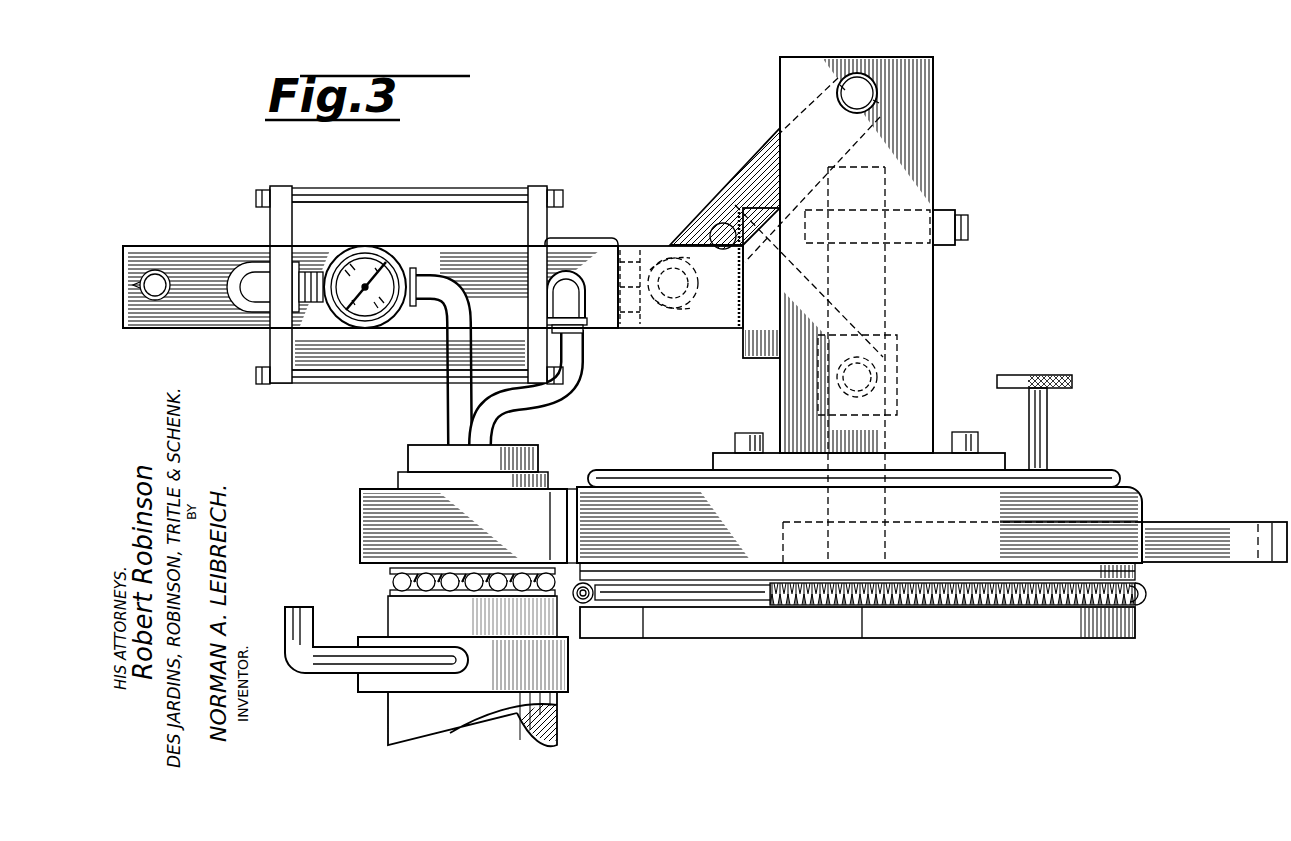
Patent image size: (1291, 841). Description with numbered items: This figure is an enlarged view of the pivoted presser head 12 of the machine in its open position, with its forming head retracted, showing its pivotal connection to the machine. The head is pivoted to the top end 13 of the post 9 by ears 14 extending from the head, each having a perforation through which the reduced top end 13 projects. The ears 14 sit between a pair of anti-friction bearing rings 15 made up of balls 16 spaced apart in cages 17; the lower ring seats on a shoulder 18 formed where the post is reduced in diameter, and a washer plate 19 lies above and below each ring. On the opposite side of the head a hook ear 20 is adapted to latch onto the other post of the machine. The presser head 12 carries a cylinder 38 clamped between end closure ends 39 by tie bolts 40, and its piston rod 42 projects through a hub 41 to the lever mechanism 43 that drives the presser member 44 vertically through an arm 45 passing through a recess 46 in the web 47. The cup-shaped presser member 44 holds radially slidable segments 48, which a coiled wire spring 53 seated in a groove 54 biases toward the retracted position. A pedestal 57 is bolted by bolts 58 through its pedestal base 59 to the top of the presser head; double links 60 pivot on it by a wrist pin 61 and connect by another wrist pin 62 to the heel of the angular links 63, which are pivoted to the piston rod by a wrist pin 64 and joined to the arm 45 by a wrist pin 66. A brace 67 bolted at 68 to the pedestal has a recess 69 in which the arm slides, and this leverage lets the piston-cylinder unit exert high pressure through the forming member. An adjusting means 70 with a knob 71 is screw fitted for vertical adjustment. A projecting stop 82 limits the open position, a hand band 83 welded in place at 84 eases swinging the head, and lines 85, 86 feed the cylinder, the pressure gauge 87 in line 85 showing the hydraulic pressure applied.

The post 9 is at (553, 708).
The presser head 12 is at (980, 275).
The top end of post 13 is at (415, 445).
The ears 14 is at (380, 518).
The anti-friction bearing rings 15 is at (392, 580).
The balls 16 is at (500, 592).
The cages 17 is at (452, 592).
The shoulder 18 is at (395, 605).
The washer plate 19 is at (398, 481).
The hook ear 20 is at (1185, 522).
The cylinder 38 is at (457, 203).
The end closure ends 39 is at (275, 218).
The tie bolts 40 is at (385, 190).
The hub 41 is at (565, 240).
The piston rod 42 is at (620, 250).
The lever mechanism 43 is at (758, 156).
The presser member 44 is at (740, 560).
The arm 45 is at (828, 492).
The recess 46 is at (935, 540).
The web 47 is at (905, 522).
The segments 48 is at (619, 624).
The coiled wire spring 53 is at (1146, 594).
The groove 54 is at (672, 600).
The post or pedestal 57 is at (930, 142).
The bolts 58 is at (962, 438).
The pedestal base 59 is at (720, 462).
The double links 60 is at (752, 180).
The wrist pin 61 is at (858, 92).
The wrist pin 62 is at (720, 230).
The angular links 63 is at (740, 342).
The wrist pin 64 is at (663, 306).
The wrist pin 66 is at (884, 360).
The brace 67 is at (946, 212).
The bolt 68 is at (970, 228).
The recess 69 is at (915, 245).
The adjusting means 70 is at (1048, 425).
The knob 71 is at (1048, 375).
The stop 82 is at (345, 655).
The hand band 83 is at (612, 475).
The weld location 84 is at (588, 478).
The line 85 is at (452, 395).
The line 86 is at (584, 398).
The pressure gauge 87 is at (370, 250).